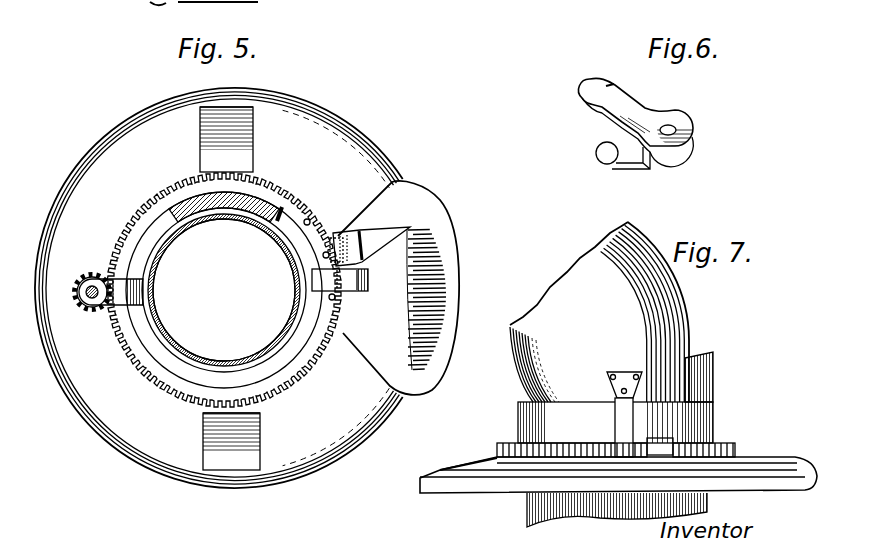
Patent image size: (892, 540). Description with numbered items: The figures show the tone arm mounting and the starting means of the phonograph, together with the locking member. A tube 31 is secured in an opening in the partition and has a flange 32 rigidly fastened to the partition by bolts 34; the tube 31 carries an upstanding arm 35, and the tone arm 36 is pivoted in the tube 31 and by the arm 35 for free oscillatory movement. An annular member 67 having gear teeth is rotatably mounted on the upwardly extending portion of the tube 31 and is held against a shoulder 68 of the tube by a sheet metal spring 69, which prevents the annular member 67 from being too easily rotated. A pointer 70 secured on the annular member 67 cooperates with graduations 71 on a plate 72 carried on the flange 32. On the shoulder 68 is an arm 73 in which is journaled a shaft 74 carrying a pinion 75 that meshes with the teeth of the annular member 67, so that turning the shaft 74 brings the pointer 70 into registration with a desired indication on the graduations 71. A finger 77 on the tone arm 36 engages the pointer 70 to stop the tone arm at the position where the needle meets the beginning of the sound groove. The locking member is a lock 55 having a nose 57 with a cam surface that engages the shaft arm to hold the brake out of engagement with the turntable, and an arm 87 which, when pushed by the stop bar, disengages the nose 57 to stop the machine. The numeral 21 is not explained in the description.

In FIG. 5, the shaft 21 is at (324, 11).
In FIG. 5, the tube 31 is at (257, 374).
In FIG. 7, the tube 31 is at (700, 413).
In FIG. 5, the flange 32 is at (362, 413).
In FIG. 7, the flange 32 is at (803, 477).
In FIG. 5, the bolts 34 is at (200, 148).
In FIG. 5, the upstanding arm 35 is at (258, 207).
In FIG. 7, the upstanding arm 35 is at (705, 358).
In FIG. 5, the tone arm 36 is at (180, 347).
In FIG. 7, the tone arm 36 is at (672, 330).
In FIG. 6, the lock 55 is at (694, 125).
In FIG. 6, the nose 57 is at (612, 86).
In FIG. 5, the annular member 67 is at (336, 237).
In FIG. 7, the annular member 67 is at (502, 437).
In FIG. 7, the shoulder 68 is at (713, 443).
In FIG. 5, the sheet metal spring 69 is at (200, 127).
In FIG. 7, the sheet metal spring 69 is at (462, 470).
In FIG. 5, the pointer 70 is at (343, 232).
In FIG. 7, the pointer 70 is at (660, 448).
In FIG. 5, the graduations 71 is at (459, 292).
In FIG. 5, the plate 72 is at (437, 213).
In FIG. 7, the plate 72 is at (593, 460).
In FIG. 5, the arm 73 is at (145, 291).
In FIG. 5, the shaft 74 is at (92, 280).
In FIG. 5, the pinion 75 is at (98, 300).
In FIG. 5, the finger 77 is at (365, 292).
In FIG. 7, the finger 77 is at (615, 422).
In FIG. 6, the arm 87 is at (603, 163).